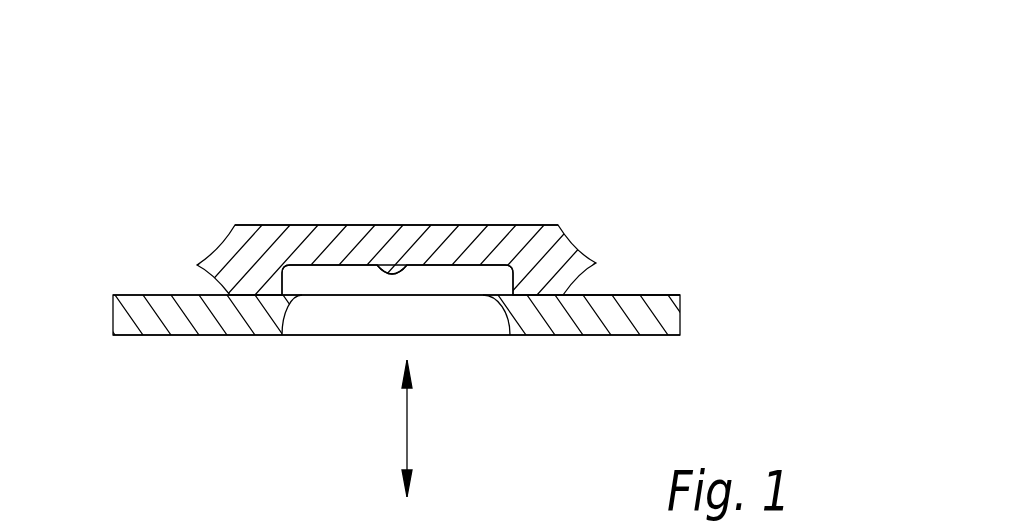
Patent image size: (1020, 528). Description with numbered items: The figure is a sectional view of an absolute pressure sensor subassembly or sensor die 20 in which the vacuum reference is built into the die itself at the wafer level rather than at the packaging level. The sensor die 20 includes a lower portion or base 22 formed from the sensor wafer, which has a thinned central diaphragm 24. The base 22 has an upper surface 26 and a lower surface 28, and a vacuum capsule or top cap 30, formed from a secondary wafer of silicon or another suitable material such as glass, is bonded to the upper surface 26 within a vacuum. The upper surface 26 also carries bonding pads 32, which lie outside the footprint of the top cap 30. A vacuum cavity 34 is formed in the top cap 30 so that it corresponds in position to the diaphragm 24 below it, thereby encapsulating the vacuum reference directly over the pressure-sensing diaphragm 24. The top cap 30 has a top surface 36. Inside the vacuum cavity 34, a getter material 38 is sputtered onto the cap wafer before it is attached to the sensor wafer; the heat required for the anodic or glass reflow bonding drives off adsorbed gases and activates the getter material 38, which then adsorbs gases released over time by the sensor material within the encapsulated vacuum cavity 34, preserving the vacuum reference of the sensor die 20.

The sensor die 20 is at (518, 113).
The base 22 is at (604, 330).
The diaphragm 24 is at (433, 296).
The upper surface 26 is at (593, 294).
The lower surface 28 is at (153, 335).
The top cap 30 is at (512, 225).
The bonding pads 32 is at (657, 294).
The vacuum cavity 34 is at (305, 280).
The top surface 36 is at (346, 225).
The getter material 38 is at (425, 265).